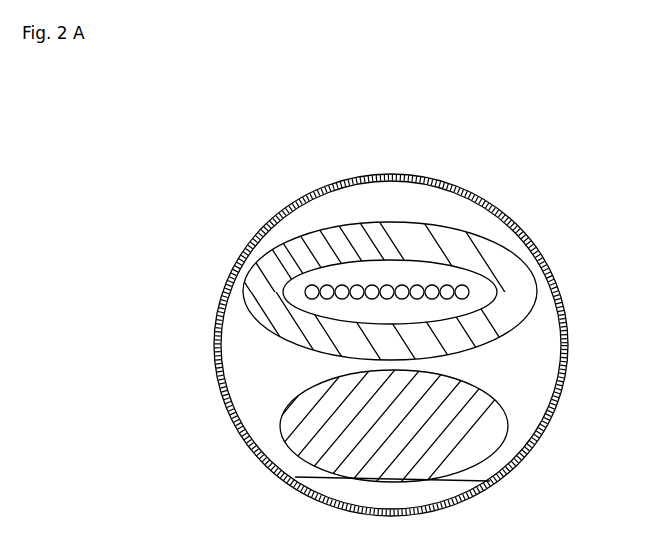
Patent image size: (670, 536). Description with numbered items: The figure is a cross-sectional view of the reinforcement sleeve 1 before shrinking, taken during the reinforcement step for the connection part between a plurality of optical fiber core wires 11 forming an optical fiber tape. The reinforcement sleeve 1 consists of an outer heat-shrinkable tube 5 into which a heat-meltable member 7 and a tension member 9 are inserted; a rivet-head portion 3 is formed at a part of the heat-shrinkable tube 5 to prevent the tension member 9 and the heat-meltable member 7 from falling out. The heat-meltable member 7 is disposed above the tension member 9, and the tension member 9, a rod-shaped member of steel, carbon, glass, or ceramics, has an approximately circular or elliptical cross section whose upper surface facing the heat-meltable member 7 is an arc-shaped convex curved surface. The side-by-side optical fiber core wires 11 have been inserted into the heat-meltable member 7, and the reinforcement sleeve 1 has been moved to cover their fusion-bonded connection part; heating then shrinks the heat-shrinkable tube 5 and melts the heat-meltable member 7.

The reinforcement sleeve 1 is at (495, 197).
The rivet-head portion 3 is at (450, 488).
The heat-shrinkable tube 5 is at (544, 257).
The heat-meltable member 7 is at (508, 300).
The tension member 9 is at (495, 430).
The optical fiber core wires 11 is at (365, 287).